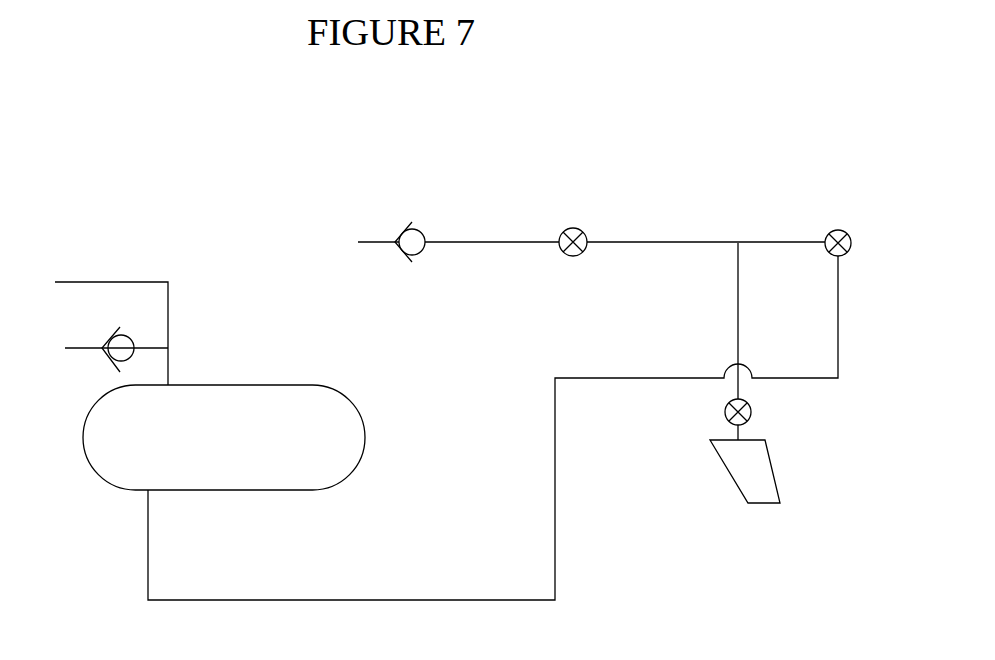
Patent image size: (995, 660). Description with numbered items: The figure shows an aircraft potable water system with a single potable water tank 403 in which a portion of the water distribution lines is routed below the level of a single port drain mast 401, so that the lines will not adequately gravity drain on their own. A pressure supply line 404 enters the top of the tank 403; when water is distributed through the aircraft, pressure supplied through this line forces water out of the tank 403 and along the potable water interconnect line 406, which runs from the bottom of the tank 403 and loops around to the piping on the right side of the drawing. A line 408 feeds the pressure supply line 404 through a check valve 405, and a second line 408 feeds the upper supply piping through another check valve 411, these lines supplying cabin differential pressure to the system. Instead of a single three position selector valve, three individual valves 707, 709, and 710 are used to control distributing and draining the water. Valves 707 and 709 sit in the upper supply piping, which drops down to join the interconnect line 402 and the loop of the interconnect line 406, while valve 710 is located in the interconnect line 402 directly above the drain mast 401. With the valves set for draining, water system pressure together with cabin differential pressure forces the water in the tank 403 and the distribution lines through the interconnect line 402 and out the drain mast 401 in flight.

The drain mast 401 is at (725, 473).
The interconnect line 402 is at (735, 307).
The potable water tank 403 is at (232, 492).
The pressure supply line 404 is at (110, 280).
The check valve 405 is at (112, 337).
The potable water interconnect line 406 is at (405, 598).
The line 408 is at (83, 352).
The check valve 411 is at (402, 227).
The valve 707 is at (583, 228).
The valve 709 is at (850, 227).
The valve 710 is at (725, 407).